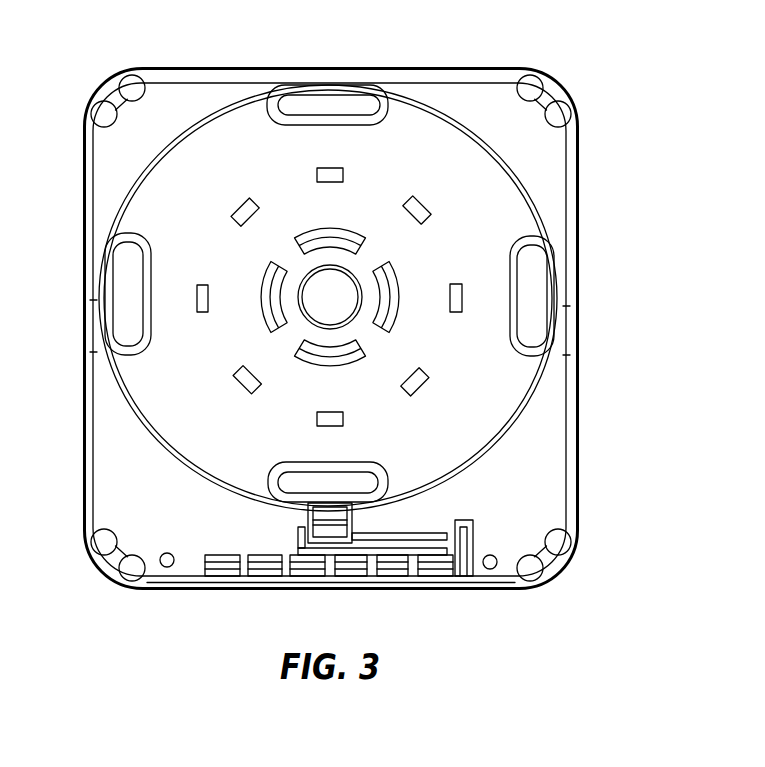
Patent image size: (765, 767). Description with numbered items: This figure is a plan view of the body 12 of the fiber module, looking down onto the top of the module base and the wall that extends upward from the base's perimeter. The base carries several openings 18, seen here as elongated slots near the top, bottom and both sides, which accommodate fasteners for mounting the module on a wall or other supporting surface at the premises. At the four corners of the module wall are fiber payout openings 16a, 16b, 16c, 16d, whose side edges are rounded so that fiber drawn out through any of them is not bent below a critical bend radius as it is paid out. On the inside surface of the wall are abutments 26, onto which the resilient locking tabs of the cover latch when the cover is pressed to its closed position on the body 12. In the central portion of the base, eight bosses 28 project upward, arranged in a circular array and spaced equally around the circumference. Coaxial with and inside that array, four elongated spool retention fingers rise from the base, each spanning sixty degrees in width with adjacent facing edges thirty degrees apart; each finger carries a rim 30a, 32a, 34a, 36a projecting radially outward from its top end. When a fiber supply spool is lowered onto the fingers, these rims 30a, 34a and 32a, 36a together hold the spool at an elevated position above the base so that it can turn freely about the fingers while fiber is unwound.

The body 12 is at (584, 163).
The fiber payout opening 16a is at (108, 568).
The fiber payout opening 16b is at (112, 92).
The fiber payout opening 16c is at (552, 92).
The fiber payout opening 16d is at (553, 567).
The opening 18 is at (370, 93).
The abutment 26 is at (94, 316).
The boss 28 is at (230, 222).
The rim 30a is at (358, 232).
The rim 32a is at (397, 279).
The rim 34a is at (312, 368).
The rim 36a is at (263, 290).